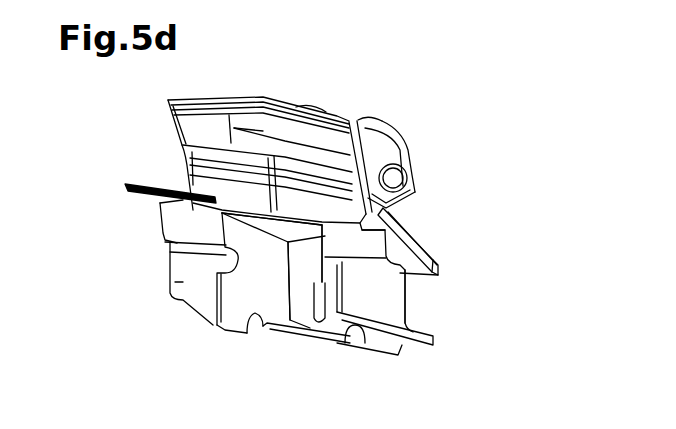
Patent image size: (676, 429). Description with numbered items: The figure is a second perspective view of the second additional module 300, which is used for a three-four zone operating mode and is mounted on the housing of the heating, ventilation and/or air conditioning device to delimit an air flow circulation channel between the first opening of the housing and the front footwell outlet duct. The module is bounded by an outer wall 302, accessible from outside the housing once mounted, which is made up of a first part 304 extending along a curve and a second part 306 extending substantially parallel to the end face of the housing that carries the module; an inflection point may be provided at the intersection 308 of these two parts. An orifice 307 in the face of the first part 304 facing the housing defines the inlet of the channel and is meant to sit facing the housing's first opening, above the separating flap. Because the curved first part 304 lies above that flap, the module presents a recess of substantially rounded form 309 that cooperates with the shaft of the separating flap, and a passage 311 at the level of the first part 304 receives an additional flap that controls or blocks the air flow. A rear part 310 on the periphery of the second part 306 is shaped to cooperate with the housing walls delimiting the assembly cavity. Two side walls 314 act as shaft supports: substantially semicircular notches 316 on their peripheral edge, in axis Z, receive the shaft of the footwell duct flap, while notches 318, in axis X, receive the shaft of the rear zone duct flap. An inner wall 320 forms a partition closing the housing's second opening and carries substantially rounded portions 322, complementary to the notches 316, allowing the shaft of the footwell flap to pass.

The second additional module 300 is at (405, 113).
The outer wall 302 is at (366, 115).
The first part 304 is at (412, 143).
The second part 306 is at (431, 228).
The orifice 307 is at (267, 127).
The intersection 308 is at (408, 200).
The recess of substantially rounded form 309 is at (180, 150).
The rear part 310 is at (441, 265).
The passage 311 is at (395, 180).
The side walls 314 is at (222, 290).
The notches 316 is at (222, 263).
The notches 318 is at (254, 330).
The inner wall 320 is at (168, 283).
The substantially rounded portions 322 is at (172, 245).